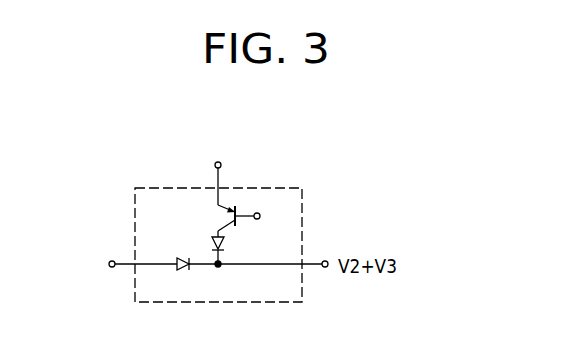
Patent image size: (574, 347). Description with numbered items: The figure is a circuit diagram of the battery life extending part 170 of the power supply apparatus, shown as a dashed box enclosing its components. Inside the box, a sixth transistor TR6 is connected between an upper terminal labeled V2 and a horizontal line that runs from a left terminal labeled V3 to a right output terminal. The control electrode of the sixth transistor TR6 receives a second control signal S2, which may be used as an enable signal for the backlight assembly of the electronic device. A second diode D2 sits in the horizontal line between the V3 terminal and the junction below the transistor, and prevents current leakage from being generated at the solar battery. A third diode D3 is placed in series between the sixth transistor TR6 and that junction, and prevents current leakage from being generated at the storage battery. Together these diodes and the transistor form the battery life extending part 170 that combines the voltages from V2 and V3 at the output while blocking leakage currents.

The battery life extending part 170 is at (275, 188).
The sixth transistor TR6 is at (215, 221).
The second diode D2 is at (183, 278).
The third diode D3 is at (232, 249).
The second control signal S2 is at (270, 218).
The second voltage terminal V2 is at (217, 173).
The third voltage terminal V3 is at (126, 265).